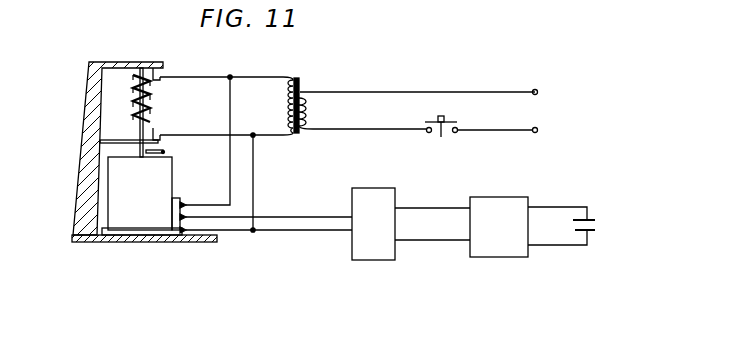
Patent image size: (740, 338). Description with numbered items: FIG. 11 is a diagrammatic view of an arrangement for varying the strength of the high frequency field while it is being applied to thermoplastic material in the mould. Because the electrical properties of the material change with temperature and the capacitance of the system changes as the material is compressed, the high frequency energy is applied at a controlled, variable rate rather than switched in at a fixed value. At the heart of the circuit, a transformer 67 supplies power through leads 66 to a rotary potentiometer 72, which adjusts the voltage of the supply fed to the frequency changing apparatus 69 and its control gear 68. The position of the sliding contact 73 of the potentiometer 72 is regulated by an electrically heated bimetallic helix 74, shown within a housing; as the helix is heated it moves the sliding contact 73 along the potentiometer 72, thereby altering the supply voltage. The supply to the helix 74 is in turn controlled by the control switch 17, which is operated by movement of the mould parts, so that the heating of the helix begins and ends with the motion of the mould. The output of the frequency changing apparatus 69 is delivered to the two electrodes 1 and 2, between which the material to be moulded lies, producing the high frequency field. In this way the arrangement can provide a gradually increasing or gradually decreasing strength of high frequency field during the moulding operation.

The electrode plate 1 is at (592, 217).
The electrode plate 2 is at (592, 236).
The control switch 17 is at (441, 138).
The electrical leads 66 is at (254, 193).
The transformer 67 is at (300, 77).
The control gear 68 is at (375, 259).
The frequency changing apparatus 69 is at (483, 258).
The rotary potentiometer 72 is at (173, 173).
The sliding contact 73 is at (163, 152).
The bimetallic helix 74 is at (150, 103).